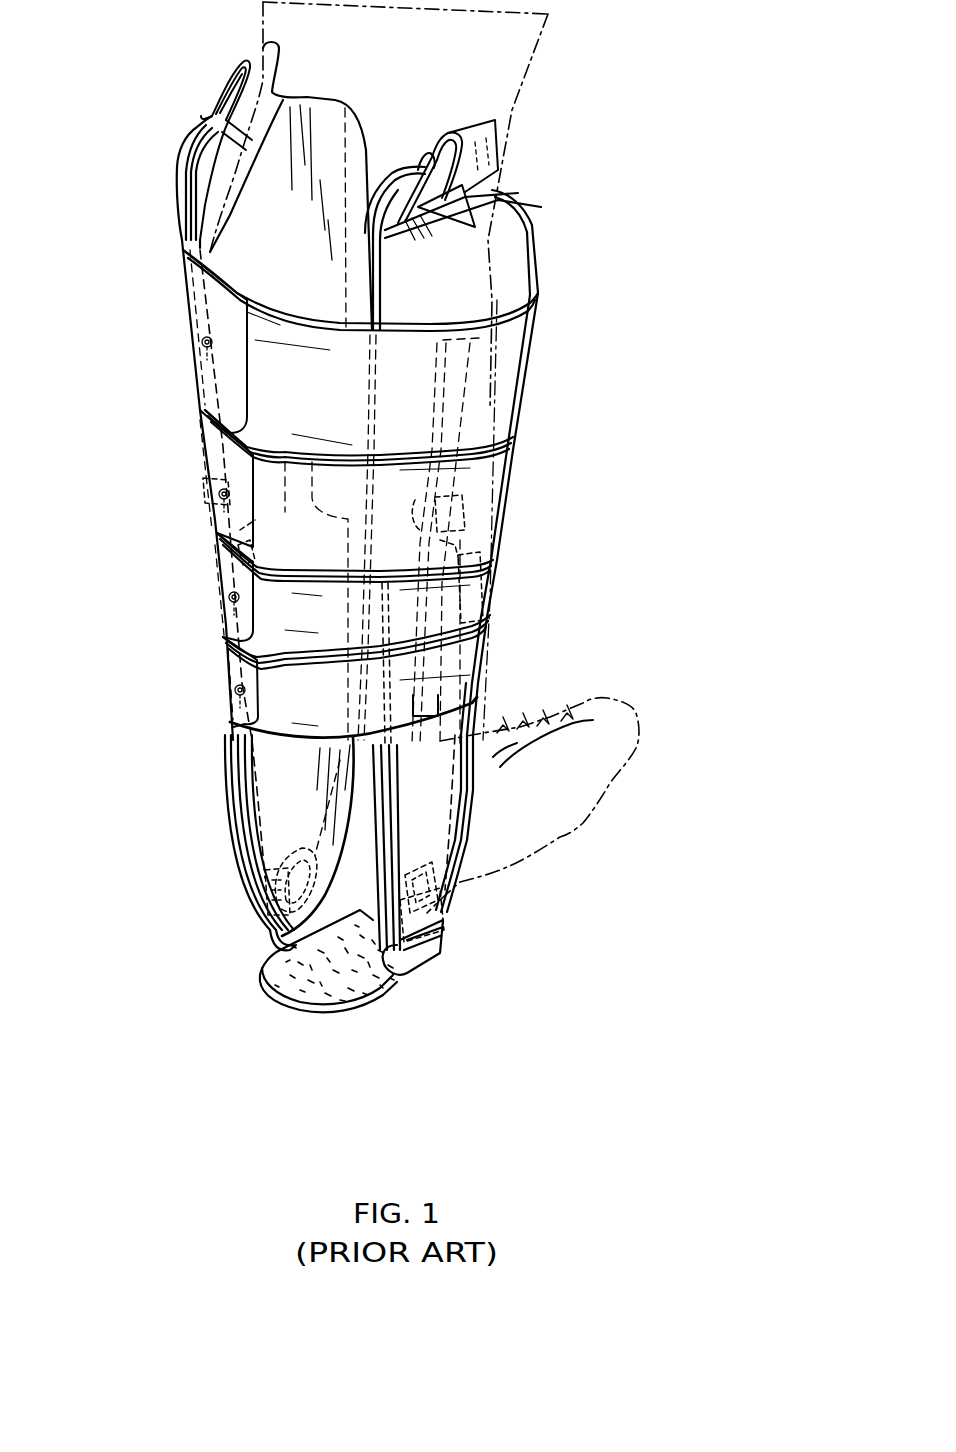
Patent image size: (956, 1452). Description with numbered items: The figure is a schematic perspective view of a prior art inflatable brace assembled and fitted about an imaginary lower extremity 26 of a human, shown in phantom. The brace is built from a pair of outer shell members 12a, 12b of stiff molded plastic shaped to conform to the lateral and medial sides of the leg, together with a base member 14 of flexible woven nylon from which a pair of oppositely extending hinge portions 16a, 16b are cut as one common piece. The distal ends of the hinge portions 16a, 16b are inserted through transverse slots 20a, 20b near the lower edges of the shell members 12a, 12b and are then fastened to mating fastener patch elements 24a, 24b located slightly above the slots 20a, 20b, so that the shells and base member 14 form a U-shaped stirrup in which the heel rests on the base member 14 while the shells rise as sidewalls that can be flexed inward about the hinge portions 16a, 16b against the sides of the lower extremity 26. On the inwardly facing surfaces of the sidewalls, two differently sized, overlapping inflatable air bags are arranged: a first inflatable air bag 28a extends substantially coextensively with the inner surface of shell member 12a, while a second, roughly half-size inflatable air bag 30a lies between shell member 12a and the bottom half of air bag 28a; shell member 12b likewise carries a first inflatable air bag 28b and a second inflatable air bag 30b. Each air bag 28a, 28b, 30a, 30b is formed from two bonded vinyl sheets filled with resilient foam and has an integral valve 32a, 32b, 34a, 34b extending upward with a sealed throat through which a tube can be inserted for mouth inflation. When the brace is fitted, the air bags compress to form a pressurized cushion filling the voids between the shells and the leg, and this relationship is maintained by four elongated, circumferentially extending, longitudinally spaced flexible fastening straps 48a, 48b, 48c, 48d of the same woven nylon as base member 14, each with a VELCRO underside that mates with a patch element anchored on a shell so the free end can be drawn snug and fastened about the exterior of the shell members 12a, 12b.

The outer shell member 12a is at (520, 208).
The outer shell member 12b is at (177, 172).
The base member 14 is at (347, 978).
The hinge portion 16a is at (440, 937).
The hinge portion 16b is at (272, 953).
The transverse slot 20a is at (460, 920).
The transverse slot 20b is at (258, 912).
The fastener patch element 24a is at (440, 883).
The fastener patch element 24b is at (265, 876).
The lower extremity 26 is at (540, 50).
The first inflatable air bag 28a is at (495, 190).
The first inflatable air bag 28b is at (238, 130).
The second inflatable air bag 30a is at (490, 602).
The second inflatable air bag 30b is at (217, 533).
The valve 32a is at (487, 134).
The valve 32b is at (262, 60).
The valve 34a is at (420, 518).
The valve 34b is at (210, 485).
The fastening strap 48a is at (513, 337).
The fastening strap 48b is at (480, 473).
The fastening strap 48c is at (490, 568).
The fastening strap 48d is at (480, 650).